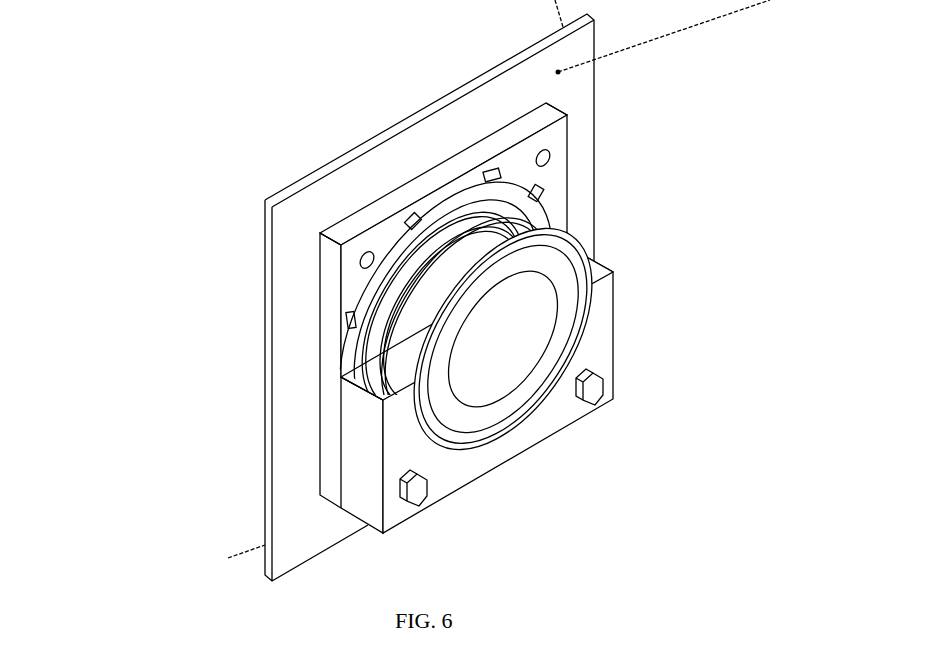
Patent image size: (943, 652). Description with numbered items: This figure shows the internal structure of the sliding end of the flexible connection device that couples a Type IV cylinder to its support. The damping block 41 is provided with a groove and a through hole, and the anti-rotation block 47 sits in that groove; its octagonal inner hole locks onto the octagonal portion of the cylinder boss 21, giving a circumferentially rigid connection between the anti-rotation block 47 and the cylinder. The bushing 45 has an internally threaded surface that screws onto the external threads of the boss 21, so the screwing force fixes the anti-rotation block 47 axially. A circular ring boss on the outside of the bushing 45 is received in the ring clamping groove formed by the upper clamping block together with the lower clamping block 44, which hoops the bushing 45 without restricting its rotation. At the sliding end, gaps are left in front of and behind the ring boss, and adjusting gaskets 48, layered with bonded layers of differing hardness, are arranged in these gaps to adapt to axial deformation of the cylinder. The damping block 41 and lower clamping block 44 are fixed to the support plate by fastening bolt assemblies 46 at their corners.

The boss 21 is at (563, 331).
The damping block 41 is at (330, 465).
The lower clamping block 44 is at (520, 442).
The bushing 45 is at (392, 315).
The fastening bolt assembly 46 is at (593, 391).
The anti-rotation block 47 is at (522, 191).
The adjusting gasket 48 is at (425, 242).